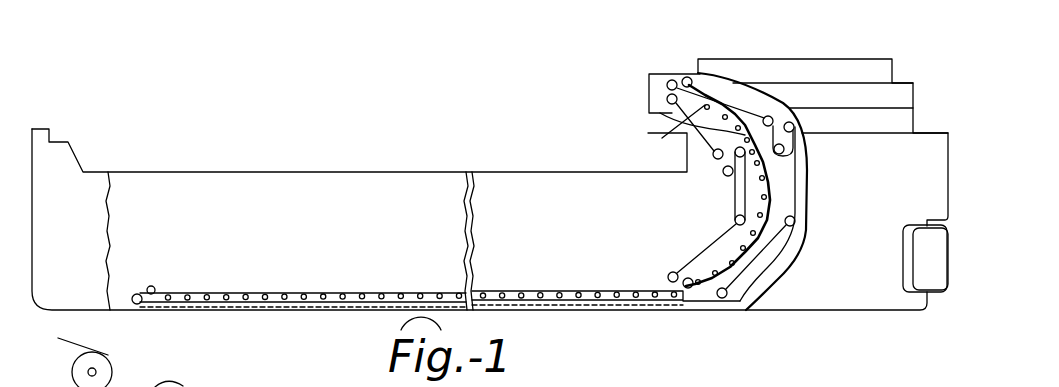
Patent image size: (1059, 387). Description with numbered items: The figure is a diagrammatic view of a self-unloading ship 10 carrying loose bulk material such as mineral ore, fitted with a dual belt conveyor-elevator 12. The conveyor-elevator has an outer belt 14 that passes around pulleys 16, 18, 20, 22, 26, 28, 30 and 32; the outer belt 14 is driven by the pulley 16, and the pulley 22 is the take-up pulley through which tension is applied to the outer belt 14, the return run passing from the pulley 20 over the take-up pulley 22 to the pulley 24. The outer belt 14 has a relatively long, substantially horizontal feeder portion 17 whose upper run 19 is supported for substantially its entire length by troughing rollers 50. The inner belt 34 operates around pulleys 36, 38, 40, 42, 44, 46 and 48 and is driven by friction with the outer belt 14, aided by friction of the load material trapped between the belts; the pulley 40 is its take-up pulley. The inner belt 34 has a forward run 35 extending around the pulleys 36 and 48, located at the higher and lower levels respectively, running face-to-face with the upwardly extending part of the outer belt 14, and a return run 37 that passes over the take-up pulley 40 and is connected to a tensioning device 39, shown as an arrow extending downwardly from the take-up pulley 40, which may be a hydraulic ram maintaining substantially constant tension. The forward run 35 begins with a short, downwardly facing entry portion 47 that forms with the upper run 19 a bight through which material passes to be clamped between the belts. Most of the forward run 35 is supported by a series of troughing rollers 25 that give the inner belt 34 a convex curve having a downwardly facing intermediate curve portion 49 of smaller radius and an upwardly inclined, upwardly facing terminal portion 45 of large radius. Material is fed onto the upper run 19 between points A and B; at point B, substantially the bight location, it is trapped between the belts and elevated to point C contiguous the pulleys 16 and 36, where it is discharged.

The self-unloading ship 10 is at (377, 169).
The dual belt conveyor-elevator 12 is at (682, 204).
The outer belt 14 is at (862, 188).
The pulley 16 is at (671, 80).
The feeder portion 17 is at (364, 289).
The pulley 18 is at (688, 77).
The upper run 19 is at (304, 294).
The pulley 20 is at (775, 118).
The take-up pulley 22 is at (785, 149).
The pulley 24 is at (795, 127).
The troughing rollers 25 is at (700, 118).
The pulley 26 is at (796, 221).
The pulley 28 is at (725, 306).
The pulley 30 is at (136, 305).
The pulley 32 is at (150, 286).
The inner belt 34 is at (708, 248).
The forward run 35 is at (727, 267).
The pulley 36 is at (667, 98).
The return run 37 is at (744, 192).
The pulley 38 is at (713, 150).
The tensioning device 39 is at (731, 184).
The take-up pulley 40 is at (723, 170).
The pulley 42 is at (757, 115).
The pulley 44 is at (735, 219).
The terminal portion 45 is at (668, 135).
The pulley 46 is at (668, 275).
The entry portion 47 is at (683, 283).
The pulley 48 is at (690, 303).
The intermediate curve portion 49 is at (767, 268).
The troughing rollers 50 is at (266, 295).
The point A is at (163, 293).
The point B is at (680, 308).
The point C is at (667, 97).